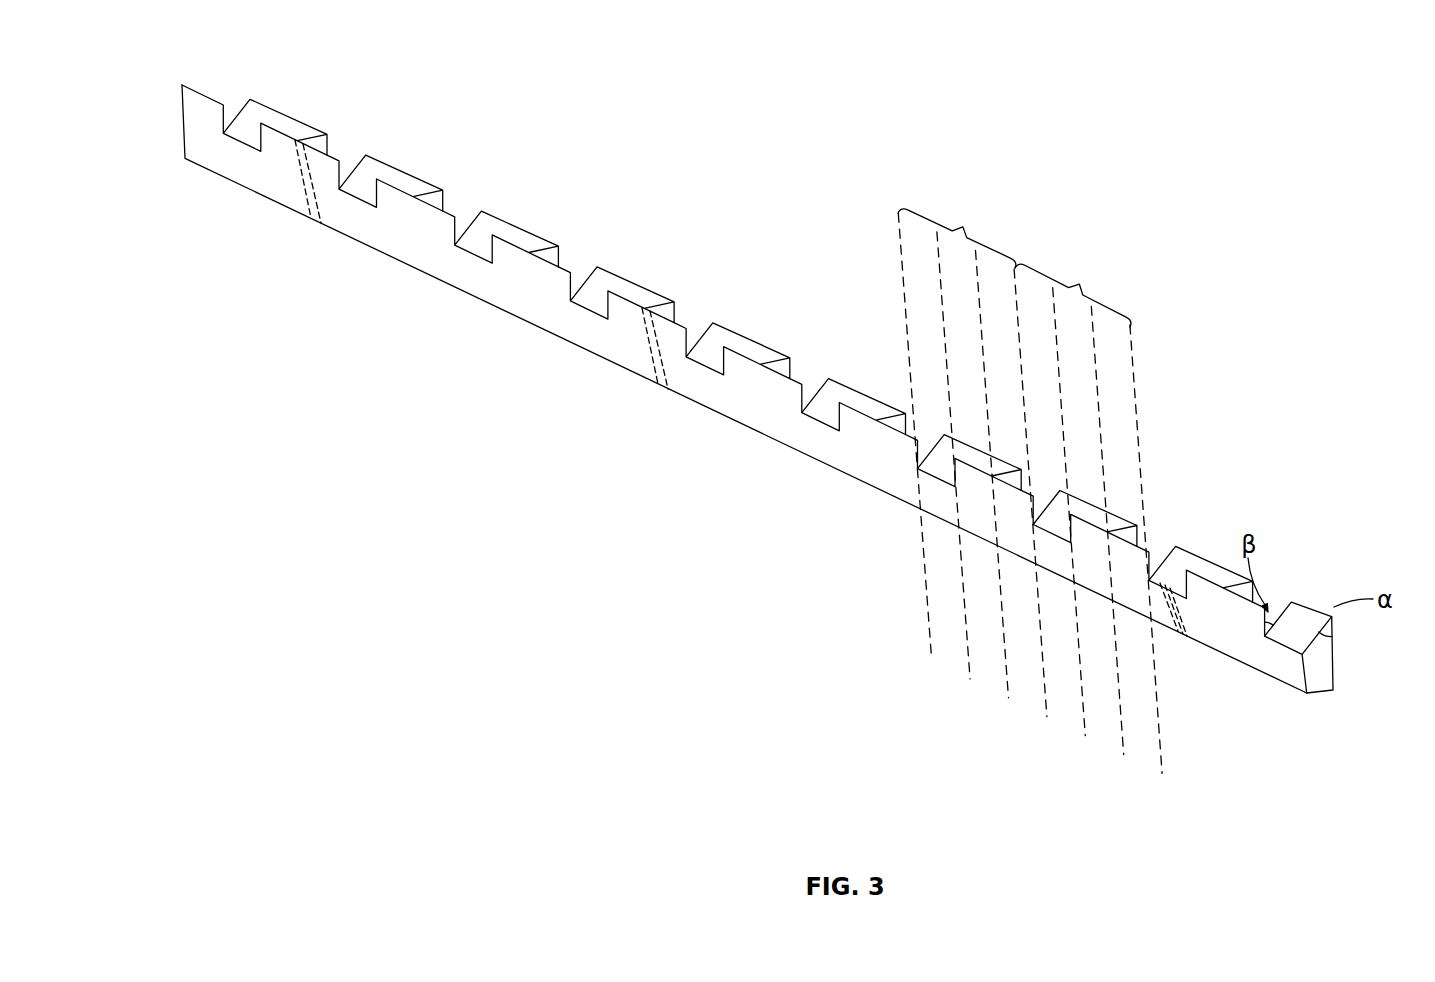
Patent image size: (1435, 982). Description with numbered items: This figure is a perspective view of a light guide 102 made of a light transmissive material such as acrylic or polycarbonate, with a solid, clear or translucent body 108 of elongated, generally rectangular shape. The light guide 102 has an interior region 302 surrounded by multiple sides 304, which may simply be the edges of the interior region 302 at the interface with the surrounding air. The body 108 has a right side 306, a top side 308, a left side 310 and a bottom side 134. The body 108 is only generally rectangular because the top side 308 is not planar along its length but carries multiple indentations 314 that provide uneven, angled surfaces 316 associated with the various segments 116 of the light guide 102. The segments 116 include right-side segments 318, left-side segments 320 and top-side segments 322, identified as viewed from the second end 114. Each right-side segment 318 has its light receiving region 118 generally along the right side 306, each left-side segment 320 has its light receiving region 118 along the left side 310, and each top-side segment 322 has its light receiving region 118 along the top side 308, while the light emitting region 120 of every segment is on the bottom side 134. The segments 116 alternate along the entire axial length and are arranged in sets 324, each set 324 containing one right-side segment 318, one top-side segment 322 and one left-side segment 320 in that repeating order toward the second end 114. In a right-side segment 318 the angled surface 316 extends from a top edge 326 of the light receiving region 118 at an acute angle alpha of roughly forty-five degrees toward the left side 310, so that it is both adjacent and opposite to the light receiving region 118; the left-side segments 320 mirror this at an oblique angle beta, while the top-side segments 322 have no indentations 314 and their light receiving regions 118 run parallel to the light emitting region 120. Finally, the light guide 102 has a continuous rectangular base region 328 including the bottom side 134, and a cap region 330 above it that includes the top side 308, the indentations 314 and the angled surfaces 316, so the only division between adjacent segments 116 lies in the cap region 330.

The light guide 102 is at (368, 64).
The body 108 is at (270, 182).
The second end 114 is at (1325, 665).
The segments 116 is at (772, 333).
The light receiving region 118 is at (963, 441).
The light emitting region 120 is at (965, 531).
The bottom side 134 is at (1320, 693).
The interior region 302 is at (1318, 685).
The sides 304 is at (1295, 690).
The right side 306 is at (1335, 657).
The top side 308 is at (1293, 613).
The left side 310 is at (1282, 673).
The indentations 314 is at (1184, 547).
The angled surfaces 316 is at (931, 462).
The right-side segments 318 is at (944, 650).
The left-side segments 320 is at (1026, 701).
The top-side segments 322 is at (986, 678).
The sets 324 is at (1030, 484).
The top edge 326 is at (1300, 600).
The base region 328 is at (176, 111).
The cap region 330 is at (176, 80).